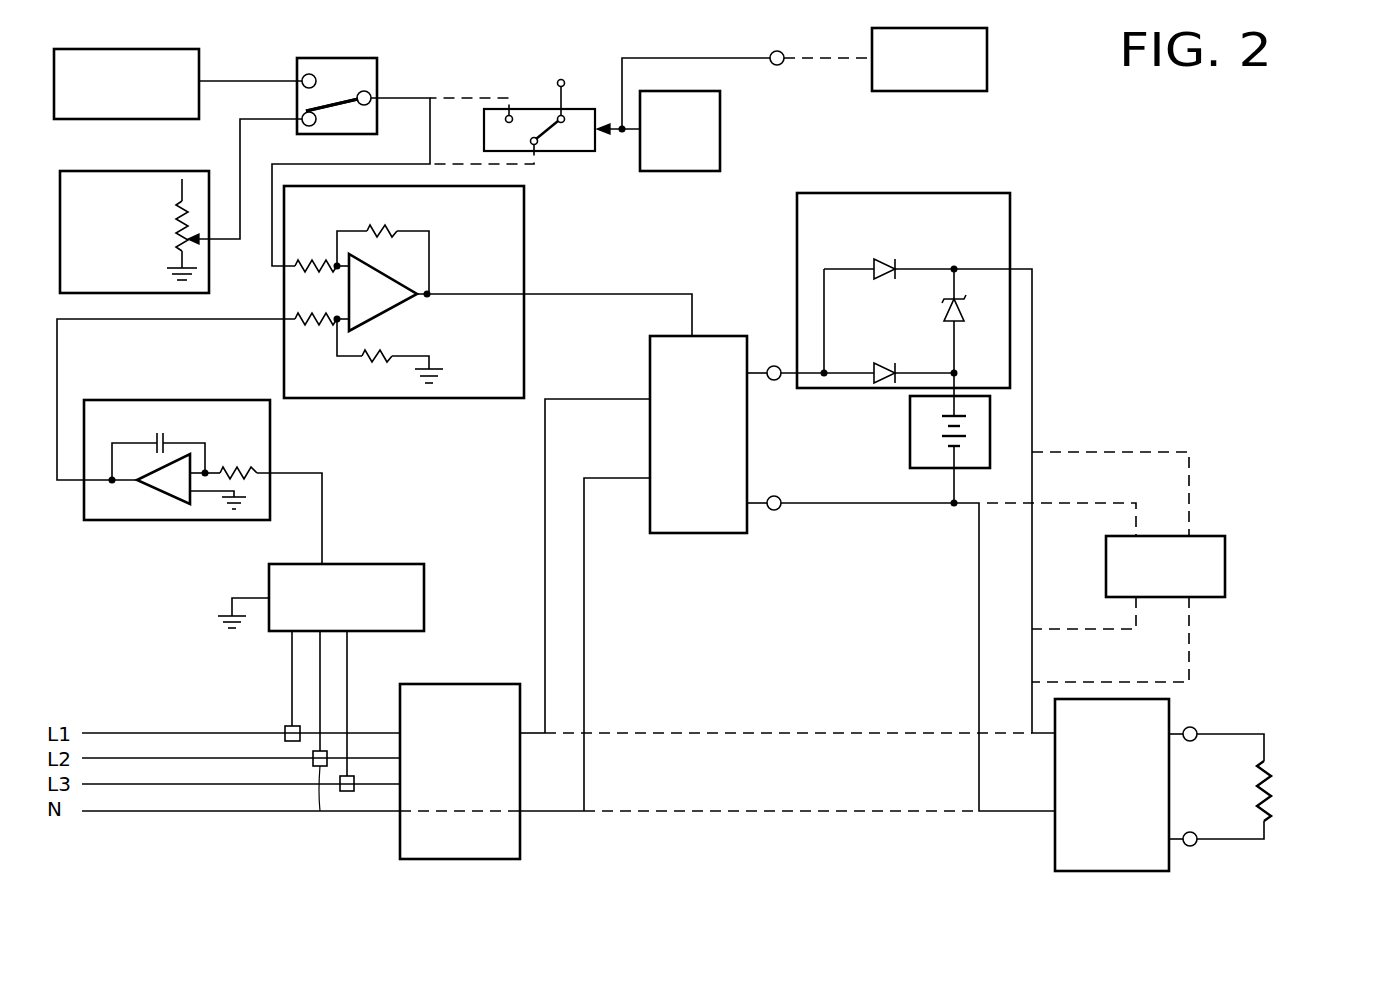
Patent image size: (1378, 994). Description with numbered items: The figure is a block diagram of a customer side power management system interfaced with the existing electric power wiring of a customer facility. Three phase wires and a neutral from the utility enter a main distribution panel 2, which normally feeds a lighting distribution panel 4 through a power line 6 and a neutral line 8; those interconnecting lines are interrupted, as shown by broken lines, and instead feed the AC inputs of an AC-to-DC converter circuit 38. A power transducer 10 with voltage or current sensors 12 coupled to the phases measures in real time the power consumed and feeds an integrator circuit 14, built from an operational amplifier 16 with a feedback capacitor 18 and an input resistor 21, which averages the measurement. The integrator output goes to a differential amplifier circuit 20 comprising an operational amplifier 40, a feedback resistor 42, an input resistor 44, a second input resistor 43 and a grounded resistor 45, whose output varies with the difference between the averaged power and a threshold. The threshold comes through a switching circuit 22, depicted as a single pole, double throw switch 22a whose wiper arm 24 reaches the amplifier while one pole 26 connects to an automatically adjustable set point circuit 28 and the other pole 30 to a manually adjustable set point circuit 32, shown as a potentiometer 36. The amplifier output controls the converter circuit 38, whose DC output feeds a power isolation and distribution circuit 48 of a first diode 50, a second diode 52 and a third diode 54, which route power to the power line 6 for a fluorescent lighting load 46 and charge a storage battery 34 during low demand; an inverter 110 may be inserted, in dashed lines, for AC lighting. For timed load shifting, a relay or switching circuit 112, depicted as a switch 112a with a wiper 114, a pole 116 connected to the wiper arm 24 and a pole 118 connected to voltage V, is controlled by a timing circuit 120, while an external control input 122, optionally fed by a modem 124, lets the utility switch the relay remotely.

The main distribution panel 2 is at (475, 683).
The lighting distribution panel 4 is at (1053, 845).
The power line 6 is at (748, 730).
The neutral line 8 is at (738, 814).
The power transducer 10 is at (422, 597).
The voltage or current sensors 12 is at (283, 727).
The integrator circuit 14 is at (268, 420).
The operational amplifier 16 is at (172, 500).
The feedback capacitor 18 is at (165, 434).
The differential amplifier circuit 20 is at (522, 224).
The input resistor 21 is at (270, 470).
The switching circuit 22 is at (375, 60).
The single pole, double throw switch 22a is at (342, 80).
The wiper arm 24 is at (369, 92).
The pole 26 is at (305, 73).
The automatically adjustable set point circuit 28 is at (198, 56).
The pole 30 is at (304, 125).
The manually adjustable set point circuit 32 is at (200, 170).
The storage battery 34 is at (908, 432).
The potentiometer 36 is at (186, 246).
The AC-to-DC converter circuit 38 is at (648, 360).
The operational amplifier 40 is at (390, 308).
The feedback resistor 42 is at (378, 233).
The second input resistor 43 is at (298, 326).
The input resistor 44 is at (298, 259).
The resistor 45 is at (372, 361).
The fluorescent lighting load 46 is at (1266, 770).
The power isolation and distribution circuit 48 is at (872, 190).
The first diode 50 is at (878, 362).
The second diode 52 is at (941, 310).
The third diode 54 is at (878, 280).
The inverter 110 is at (1223, 553).
The relay or switching circuit 112 is at (596, 147).
The single pole, double throw switch 112a is at (529, 120).
The wiper 114 is at (534, 145).
The pole 116 is at (503, 118).
The pole 118 is at (564, 116).
The timing circuit 120 is at (718, 128).
The external control input 122 is at (777, 64).
The modem 124 is at (965, 90).